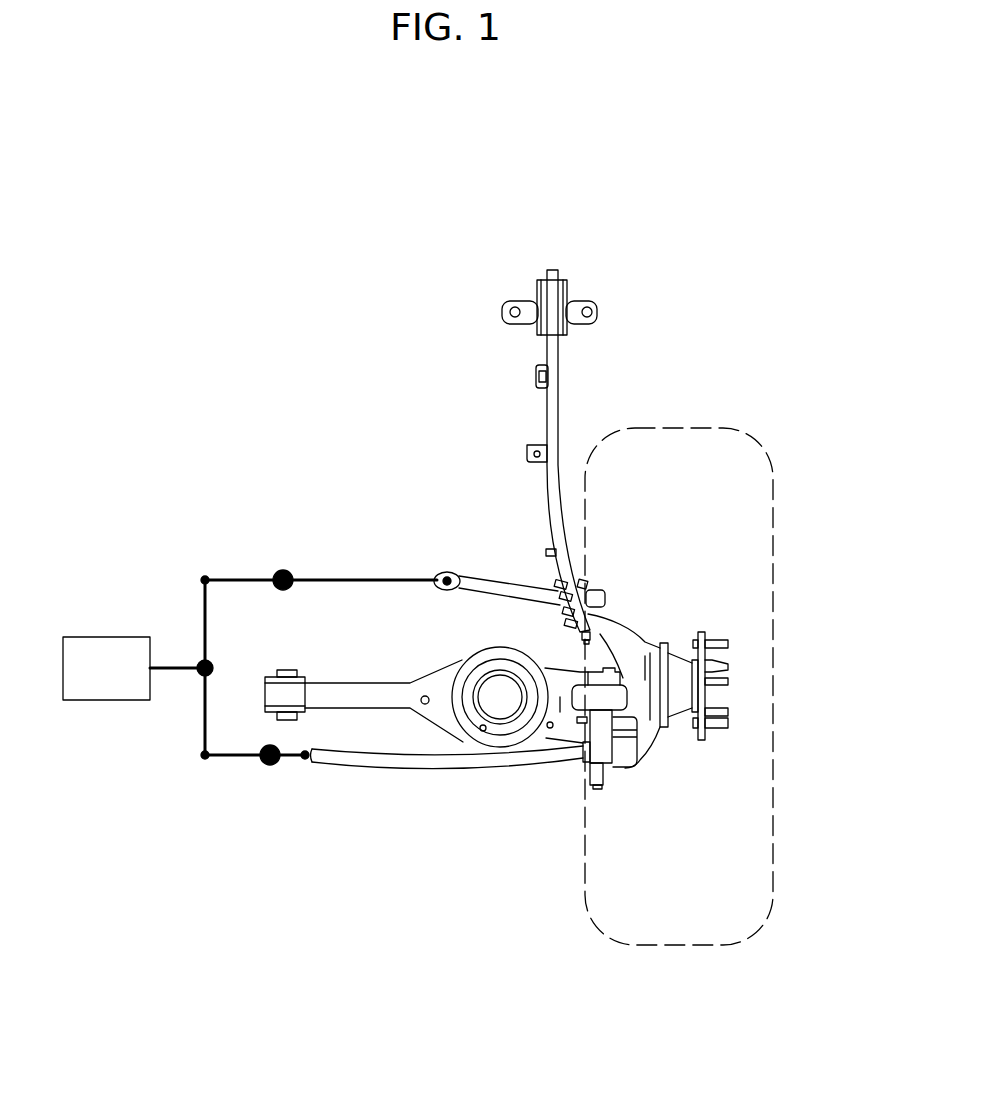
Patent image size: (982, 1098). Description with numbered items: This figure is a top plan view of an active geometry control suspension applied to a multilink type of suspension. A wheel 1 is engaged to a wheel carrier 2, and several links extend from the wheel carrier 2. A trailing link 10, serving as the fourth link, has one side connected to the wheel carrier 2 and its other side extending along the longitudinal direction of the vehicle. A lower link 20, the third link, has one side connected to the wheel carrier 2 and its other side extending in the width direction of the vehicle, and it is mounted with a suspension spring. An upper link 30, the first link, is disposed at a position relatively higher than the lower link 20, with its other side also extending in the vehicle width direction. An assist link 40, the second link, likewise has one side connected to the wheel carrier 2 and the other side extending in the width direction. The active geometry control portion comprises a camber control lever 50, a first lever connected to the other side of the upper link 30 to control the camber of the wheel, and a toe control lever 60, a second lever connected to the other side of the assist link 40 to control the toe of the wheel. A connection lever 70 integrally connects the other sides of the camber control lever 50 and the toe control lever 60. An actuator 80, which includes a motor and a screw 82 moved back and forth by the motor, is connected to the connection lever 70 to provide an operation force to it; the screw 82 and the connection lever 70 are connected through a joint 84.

The wheel 1 is at (683, 428).
The wheel carrier 2 is at (638, 628).
The trailing link 10 is at (546, 402).
The lower link 20 is at (337, 683).
The upper link 30 is at (437, 773).
The assist link 40 is at (488, 578).
The camber control lever 50 is at (238, 769).
The toe control lever 60 is at (296, 556).
The connection lever 70 is at (204, 603).
The actuator 80 is at (100, 637).
The screw 82 is at (176, 670).
The joint 84 is at (200, 678).